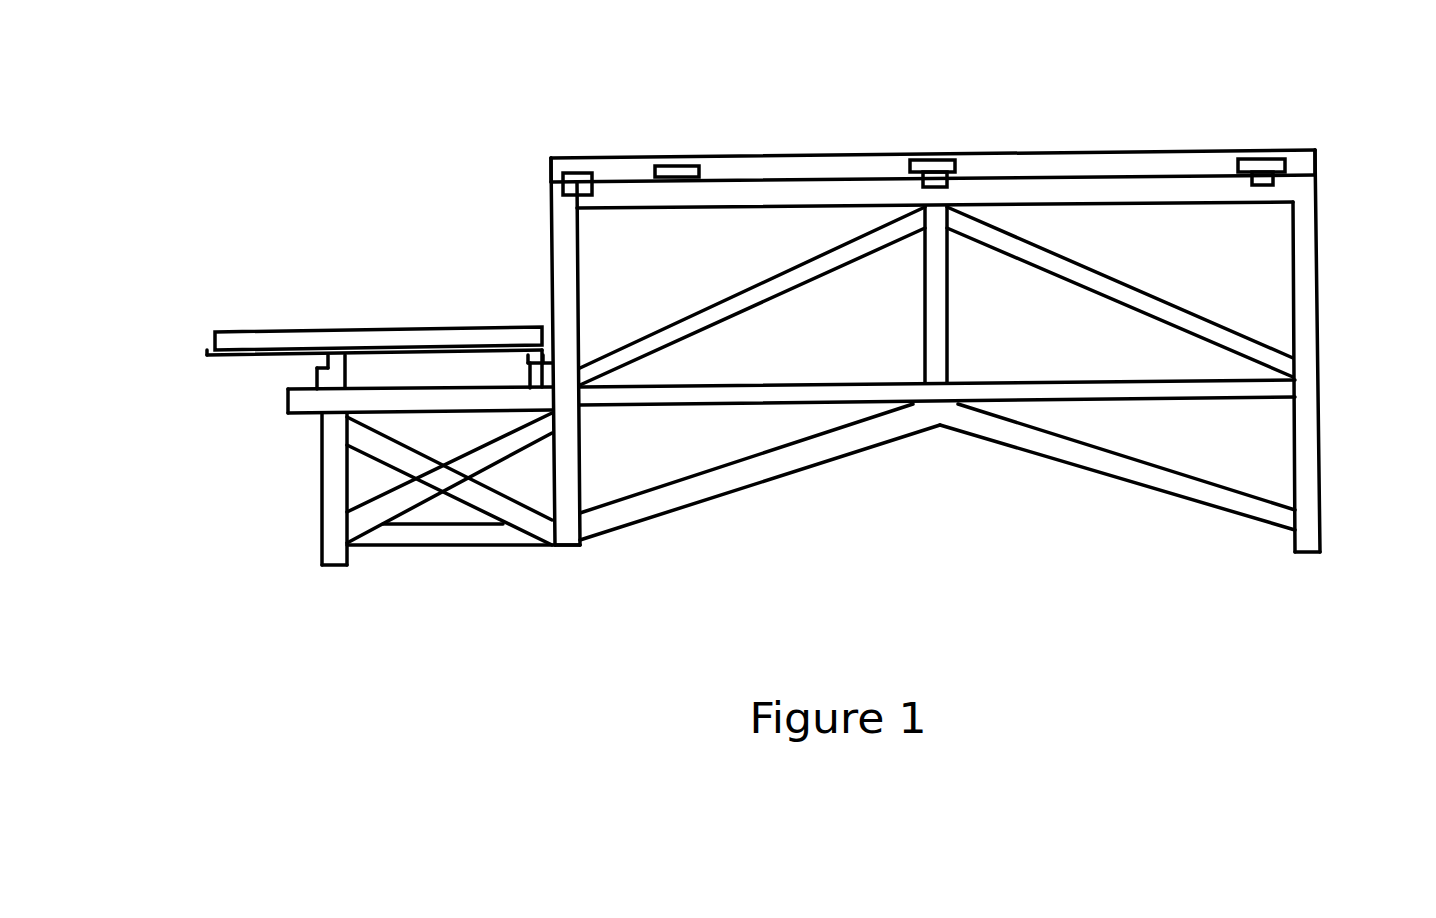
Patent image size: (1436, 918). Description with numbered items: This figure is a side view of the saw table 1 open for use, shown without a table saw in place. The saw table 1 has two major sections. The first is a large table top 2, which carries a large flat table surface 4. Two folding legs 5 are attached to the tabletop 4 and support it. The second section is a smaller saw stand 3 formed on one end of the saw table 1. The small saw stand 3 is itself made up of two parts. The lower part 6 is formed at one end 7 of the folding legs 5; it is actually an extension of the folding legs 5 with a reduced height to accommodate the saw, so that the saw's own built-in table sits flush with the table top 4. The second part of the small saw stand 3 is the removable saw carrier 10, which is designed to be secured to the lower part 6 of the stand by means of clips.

The saw table 1 is at (416, 160).
The table top 2 is at (949, 108).
The saw stand 3 is at (279, 548).
The table surface 4 is at (1090, 150).
The folding legs 5 is at (995, 442).
The lower part 6 is at (423, 540).
The end 7 is at (595, 558).
The removable saw carrier 10 is at (264, 320).